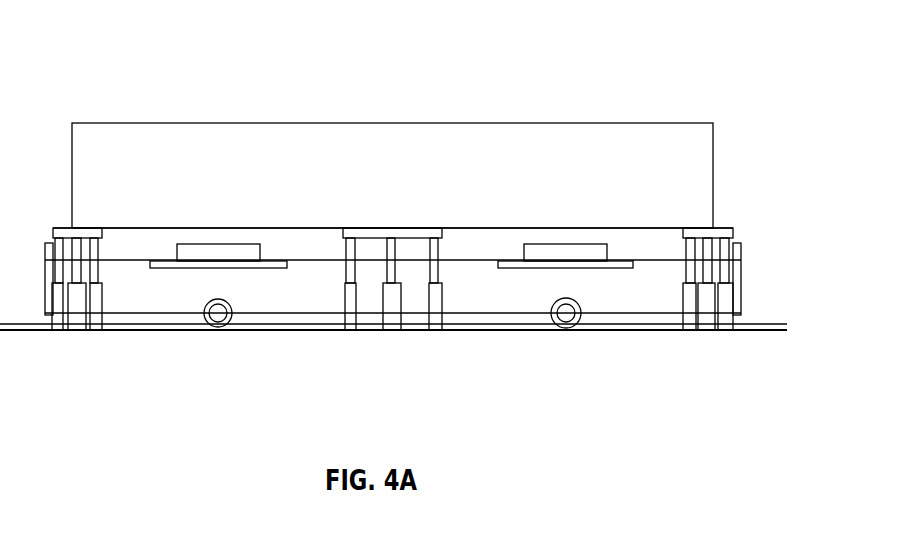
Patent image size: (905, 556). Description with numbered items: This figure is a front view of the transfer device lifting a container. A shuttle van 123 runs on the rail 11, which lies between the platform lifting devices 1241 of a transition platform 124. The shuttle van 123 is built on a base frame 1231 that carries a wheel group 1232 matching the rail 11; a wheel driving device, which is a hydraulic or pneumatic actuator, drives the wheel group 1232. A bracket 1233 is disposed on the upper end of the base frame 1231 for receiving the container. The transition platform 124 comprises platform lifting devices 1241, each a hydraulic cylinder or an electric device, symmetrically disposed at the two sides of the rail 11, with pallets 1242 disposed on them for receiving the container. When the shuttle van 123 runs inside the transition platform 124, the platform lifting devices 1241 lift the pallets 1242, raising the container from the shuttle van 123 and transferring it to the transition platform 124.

The rail 11 is at (618, 318).
The shuttle van 123 is at (207, 237).
The base frame 1231 is at (132, 292).
The wheel group 1232 is at (540, 310).
The bracket 1233 is at (557, 254).
The transition platform 124 is at (392, 212).
The platform lifting device 1241 is at (385, 307).
The pallet 1242 is at (410, 235).